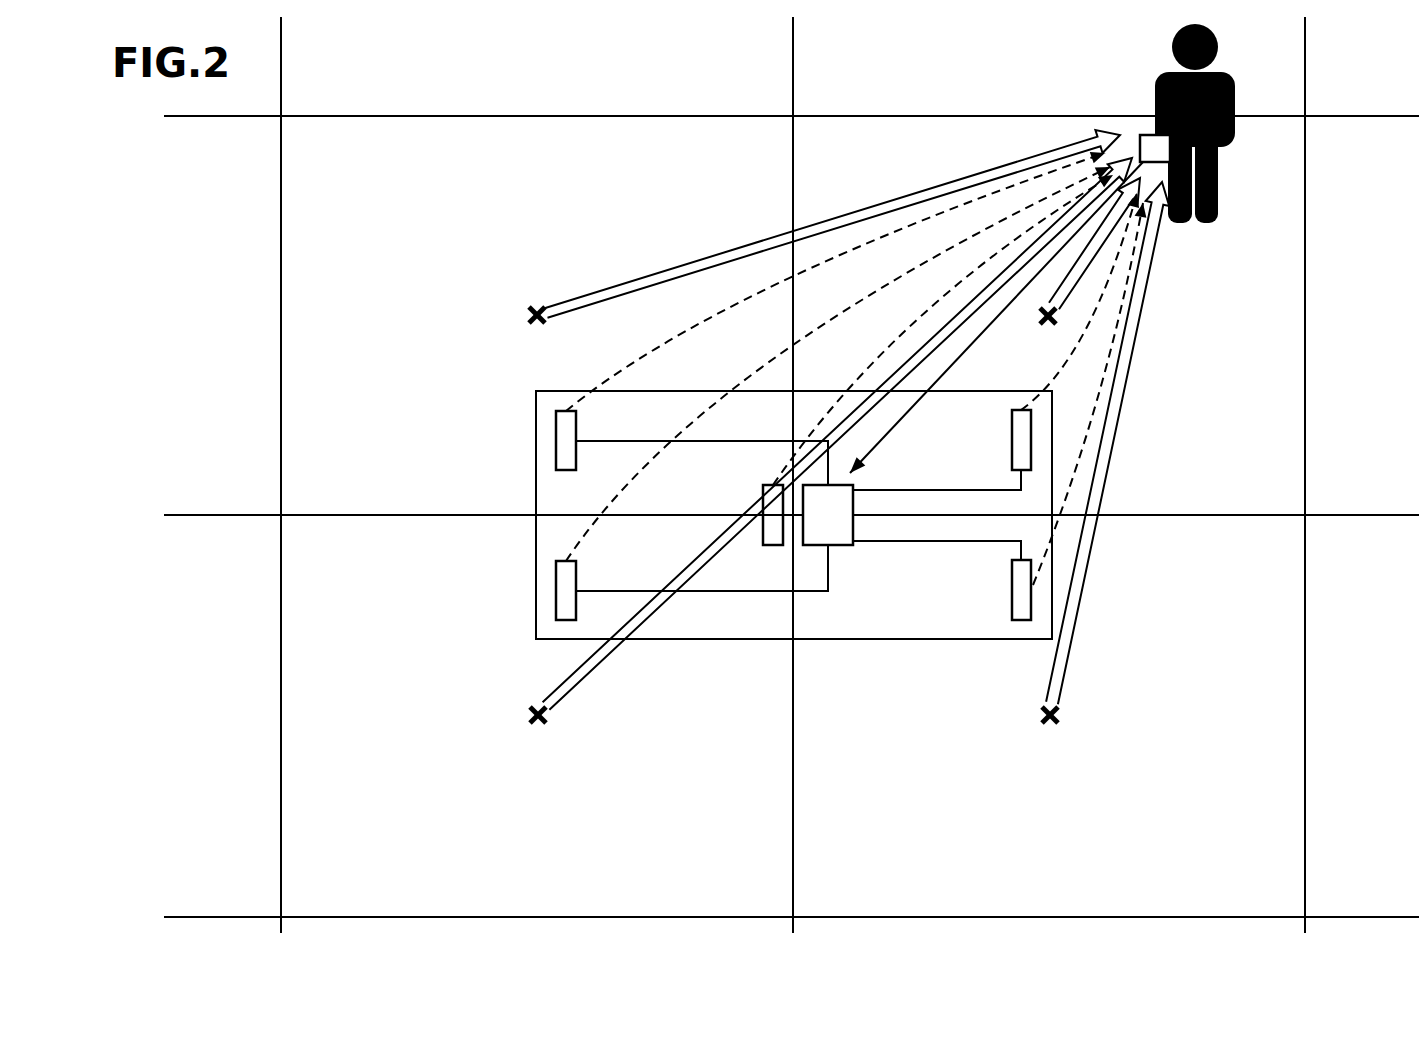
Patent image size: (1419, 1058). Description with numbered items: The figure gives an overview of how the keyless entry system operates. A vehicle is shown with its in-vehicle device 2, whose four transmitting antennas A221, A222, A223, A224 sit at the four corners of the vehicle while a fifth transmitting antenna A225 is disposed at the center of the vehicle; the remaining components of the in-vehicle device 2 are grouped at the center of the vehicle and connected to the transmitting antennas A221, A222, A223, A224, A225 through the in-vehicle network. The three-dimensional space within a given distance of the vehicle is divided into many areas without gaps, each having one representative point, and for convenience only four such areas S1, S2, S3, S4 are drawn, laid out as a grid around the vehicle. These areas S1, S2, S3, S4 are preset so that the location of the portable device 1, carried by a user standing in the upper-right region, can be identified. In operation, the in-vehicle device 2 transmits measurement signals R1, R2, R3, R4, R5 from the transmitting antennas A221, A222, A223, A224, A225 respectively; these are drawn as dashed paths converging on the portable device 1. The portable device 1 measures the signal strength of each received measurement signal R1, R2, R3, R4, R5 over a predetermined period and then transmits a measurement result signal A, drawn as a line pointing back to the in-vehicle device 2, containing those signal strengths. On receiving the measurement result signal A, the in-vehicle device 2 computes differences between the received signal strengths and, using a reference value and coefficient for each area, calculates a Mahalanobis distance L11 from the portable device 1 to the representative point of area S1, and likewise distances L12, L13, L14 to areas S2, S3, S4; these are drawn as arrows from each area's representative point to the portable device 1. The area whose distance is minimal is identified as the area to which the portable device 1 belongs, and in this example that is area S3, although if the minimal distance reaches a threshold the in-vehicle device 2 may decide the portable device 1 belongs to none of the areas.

The portable device 1 is at (1142, 147).
The in-vehicle device 2 is at (845, 545).
The measurement result signal A is at (891, 430).
The transmitting antenna A221 is at (555, 431).
The transmitting antenna A222 is at (555, 589).
The transmitting antenna A223 is at (1012, 418).
The transmitting antenna A224 is at (1012, 588).
The transmitting antenna A225 is at (775, 545).
The distance L11 is at (666, 271).
The distance L12 is at (595, 672).
The distance L13 is at (1055, 290).
The distance L14 is at (1070, 662).
The measurement signal R1 is at (676, 337).
The measurement signal R2 is at (763, 363).
The measurement signal R3 is at (1058, 378).
The measurement signal R4 is at (1088, 430).
The measurement signal R5 is at (890, 340).
The area S1 is at (320, 149).
The area S2 is at (320, 549).
The area S3 is at (832, 149).
The area S4 is at (832, 676).